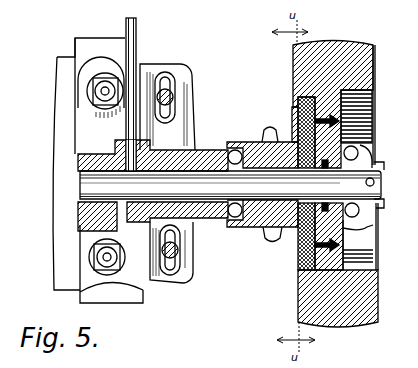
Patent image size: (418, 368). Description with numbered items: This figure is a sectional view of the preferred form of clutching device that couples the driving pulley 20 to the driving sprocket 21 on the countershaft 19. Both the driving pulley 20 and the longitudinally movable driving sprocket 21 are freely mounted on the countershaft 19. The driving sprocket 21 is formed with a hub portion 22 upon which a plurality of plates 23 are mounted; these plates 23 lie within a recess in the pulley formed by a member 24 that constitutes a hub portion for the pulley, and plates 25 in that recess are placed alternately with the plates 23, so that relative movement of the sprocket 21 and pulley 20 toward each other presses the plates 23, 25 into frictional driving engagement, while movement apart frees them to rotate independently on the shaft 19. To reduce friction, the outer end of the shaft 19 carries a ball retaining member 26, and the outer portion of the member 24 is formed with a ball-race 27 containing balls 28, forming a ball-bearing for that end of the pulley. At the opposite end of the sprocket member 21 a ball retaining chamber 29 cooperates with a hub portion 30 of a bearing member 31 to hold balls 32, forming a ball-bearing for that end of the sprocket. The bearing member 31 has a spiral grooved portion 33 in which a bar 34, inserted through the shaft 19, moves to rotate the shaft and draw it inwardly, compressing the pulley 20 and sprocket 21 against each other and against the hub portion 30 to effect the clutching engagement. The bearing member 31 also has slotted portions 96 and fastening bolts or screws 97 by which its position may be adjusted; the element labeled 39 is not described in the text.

The countershaft 19 is at (201, 168).
The driving pulley 20 is at (352, 318).
The driving sprocket 21 is at (247, 227).
The hub portion 22 is at (291, 222).
The plates 23 is at (299, 118).
The member 24 is at (350, 82).
The plates 25 is at (300, 102).
The ball retaining member 26 is at (359, 148).
The ball-race 27 is at (372, 165).
The balls 28 is at (368, 116).
The ball retaining chamber 29 is at (246, 141).
The hub portion 30 is at (205, 216).
The bearing member 31 is at (89, 164).
The balls 32 is at (238, 236).
The grooved portion 33 is at (107, 226).
The bar 34 is at (103, 108).
The spring seat 39 is at (392, 262).
The slotted portions 96 is at (165, 77).
The fastening bolts or screws 97 is at (168, 93).